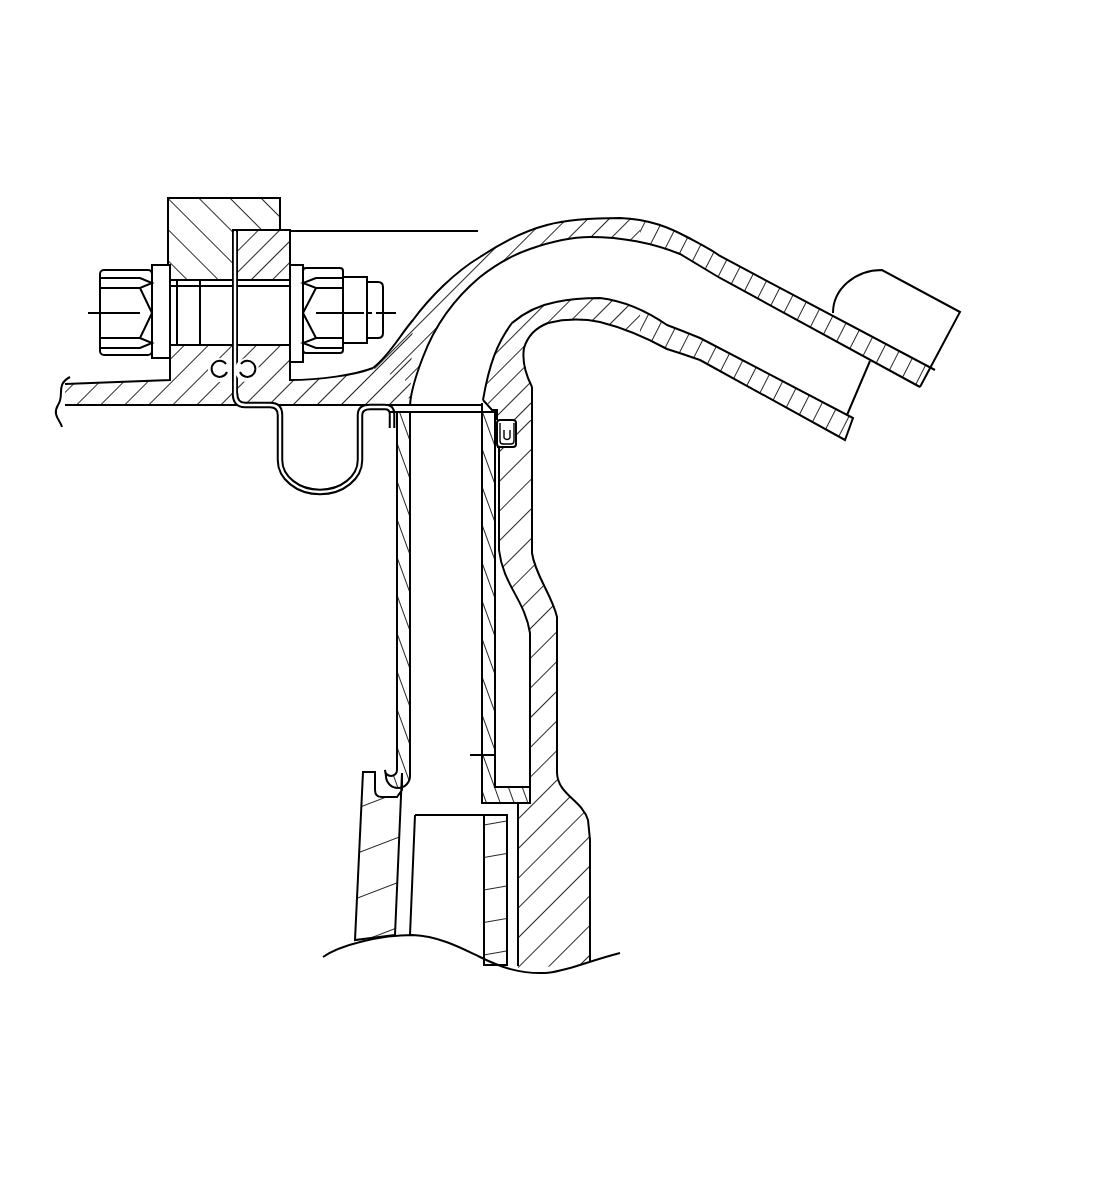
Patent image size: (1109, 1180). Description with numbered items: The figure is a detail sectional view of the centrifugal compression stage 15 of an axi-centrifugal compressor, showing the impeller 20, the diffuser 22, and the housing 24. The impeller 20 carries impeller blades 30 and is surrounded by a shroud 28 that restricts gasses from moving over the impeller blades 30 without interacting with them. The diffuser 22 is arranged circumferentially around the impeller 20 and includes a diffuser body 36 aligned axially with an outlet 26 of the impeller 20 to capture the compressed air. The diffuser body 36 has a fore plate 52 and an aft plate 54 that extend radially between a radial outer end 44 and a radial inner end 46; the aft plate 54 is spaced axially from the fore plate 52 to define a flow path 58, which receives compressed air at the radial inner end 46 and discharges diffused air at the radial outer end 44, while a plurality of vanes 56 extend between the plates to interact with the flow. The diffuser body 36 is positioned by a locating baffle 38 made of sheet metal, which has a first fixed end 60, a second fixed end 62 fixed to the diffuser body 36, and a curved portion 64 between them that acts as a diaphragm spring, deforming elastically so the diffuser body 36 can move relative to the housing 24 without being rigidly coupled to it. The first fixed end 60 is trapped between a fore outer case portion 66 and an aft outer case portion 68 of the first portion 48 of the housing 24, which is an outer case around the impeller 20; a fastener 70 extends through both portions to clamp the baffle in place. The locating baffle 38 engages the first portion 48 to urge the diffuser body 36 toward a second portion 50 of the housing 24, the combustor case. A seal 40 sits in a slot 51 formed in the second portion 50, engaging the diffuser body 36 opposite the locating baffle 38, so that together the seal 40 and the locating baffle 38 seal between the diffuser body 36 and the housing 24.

The centrifugal compression stage 15 is at (142, 110).
The impeller 20 is at (243, 817).
The diffuser 22 is at (222, 590).
The housing 24 is at (512, 150).
The outlet 26 is at (435, 790).
The shroud 28 is at (348, 827).
The impeller blades 30 is at (400, 877).
The diffuser body 36 is at (367, 610).
The locating baffle 38 is at (245, 458).
The seal 40 is at (520, 440).
The radial outer end 44 is at (492, 394).
The radial inner end 46 is at (517, 808).
The first portion of the housing 48 is at (272, 90).
The second portion of the housing 50 is at (543, 388).
The slot 51 is at (510, 409).
The fore plate 52 is at (390, 578).
The aft plate 54 is at (504, 603).
The vanes 56 is at (437, 697).
The flow path 58 is at (433, 592).
The first fixed end 60 is at (218, 380).
The second fixed end 62 is at (382, 430).
The curved portion 64 is at (283, 490).
The fore outer case portion 66 is at (195, 192).
The aft outer case portion 68 is at (477, 243).
The fastener 70 is at (263, 288).